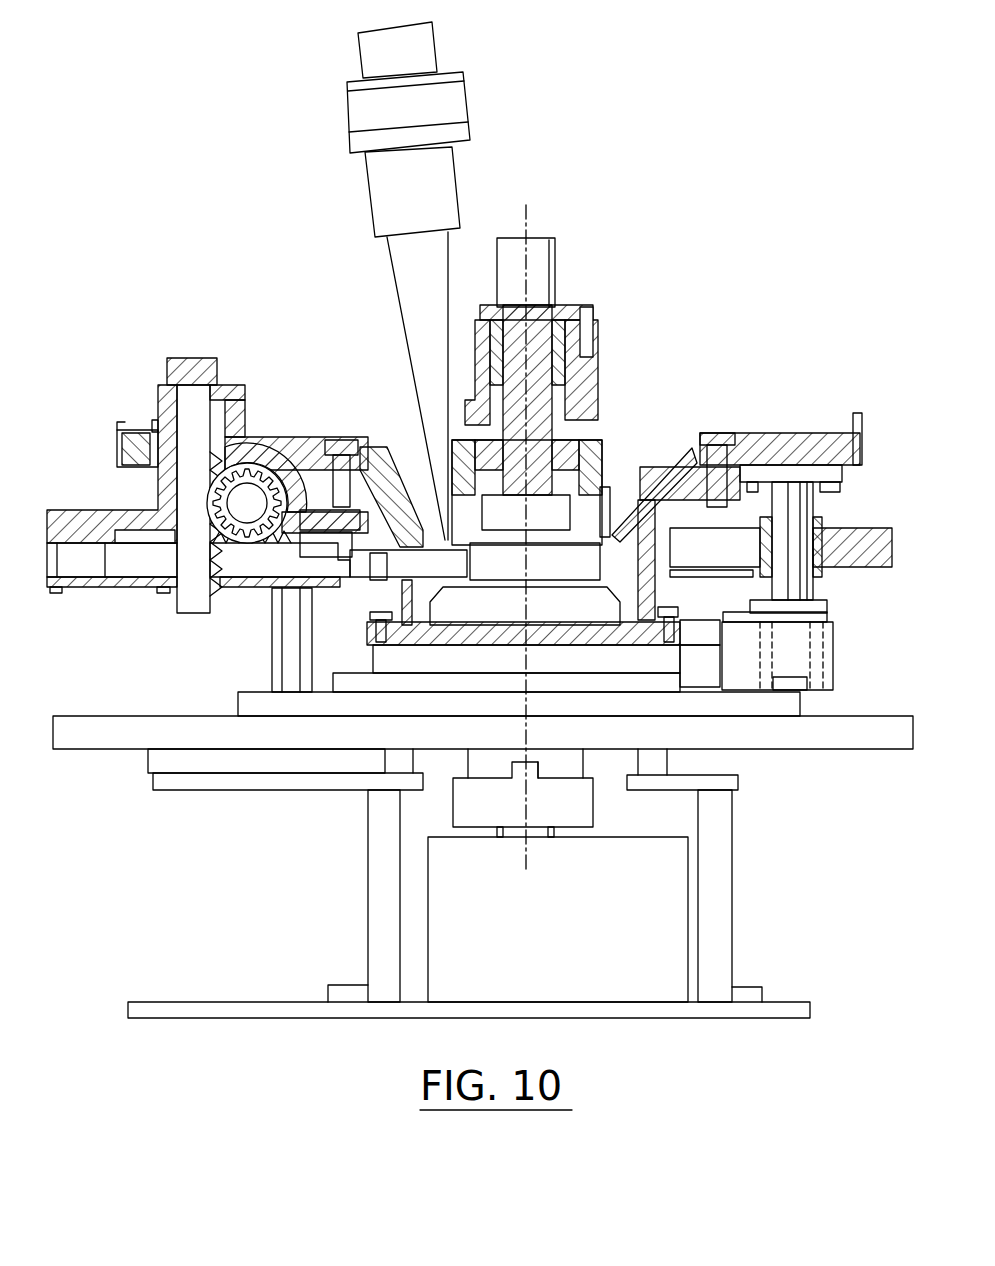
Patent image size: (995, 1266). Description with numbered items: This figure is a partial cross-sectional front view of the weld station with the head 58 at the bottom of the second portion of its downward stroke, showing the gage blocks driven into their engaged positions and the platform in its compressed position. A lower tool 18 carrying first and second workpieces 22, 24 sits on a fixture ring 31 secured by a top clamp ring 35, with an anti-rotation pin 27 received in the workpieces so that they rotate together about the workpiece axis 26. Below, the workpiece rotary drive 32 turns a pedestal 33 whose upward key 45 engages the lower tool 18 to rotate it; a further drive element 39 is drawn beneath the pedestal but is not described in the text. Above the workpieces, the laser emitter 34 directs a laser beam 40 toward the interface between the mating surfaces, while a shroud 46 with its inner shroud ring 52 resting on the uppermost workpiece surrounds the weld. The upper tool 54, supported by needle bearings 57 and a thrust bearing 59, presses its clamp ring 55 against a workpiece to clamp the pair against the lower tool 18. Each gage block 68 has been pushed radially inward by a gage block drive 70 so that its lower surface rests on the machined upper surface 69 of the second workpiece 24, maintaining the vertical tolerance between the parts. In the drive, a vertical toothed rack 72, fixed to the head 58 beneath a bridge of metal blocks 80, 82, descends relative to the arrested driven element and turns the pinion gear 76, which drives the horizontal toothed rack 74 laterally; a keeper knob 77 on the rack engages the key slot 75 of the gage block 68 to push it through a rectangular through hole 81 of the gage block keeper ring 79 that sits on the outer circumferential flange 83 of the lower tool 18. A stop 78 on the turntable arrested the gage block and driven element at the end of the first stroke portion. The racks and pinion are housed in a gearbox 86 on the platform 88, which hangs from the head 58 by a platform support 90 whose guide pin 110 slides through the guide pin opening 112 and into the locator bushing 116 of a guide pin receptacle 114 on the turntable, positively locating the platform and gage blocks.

The lower tool 18 is at (600, 625).
The first workpiece 22 is at (527, 510).
The second workpiece 24 is at (587, 573).
The workpiece axis 26 is at (527, 213).
The anti-rotation pin 27 is at (465, 590).
The fixture ring 31 is at (620, 690).
The workpiece rotary drive 32 is at (675, 910).
The pedestal 33 is at (463, 800).
The laser emitter 34 is at (353, 98).
The top clamp ring 35 is at (420, 668).
The drive 39 is at (557, 782).
The laser beam 40 is at (403, 277).
The key 45 is at (518, 773).
The shroud 46 is at (663, 453).
The inner shroud ring 52 is at (610, 527).
The upper tool 54 is at (537, 323).
The clamp ring 55 is at (613, 500).
The needle bearings 57 is at (553, 390).
The head 58 is at (130, 445).
The thrust bearing 59 is at (565, 442).
The gage block 68 is at (417, 510).
The machined upper surface 69 is at (578, 572).
The gage block drive 70 is at (267, 440).
The vertical toothed rack 72 is at (188, 577).
The horizontal toothed rack 74 is at (270, 563).
The key slot 75 is at (367, 600).
The pinion gear 76 is at (257, 497).
The keeper knob 77 is at (357, 560).
The stop 78 is at (287, 645).
The gage block keeper ring 79 is at (657, 600).
The metal block 80 is at (157, 420).
The rectangular through hole 81 is at (672, 555).
The metal block 82 is at (190, 362).
The outer circumferential flange 83 is at (368, 640).
The gearbox 86 is at (83, 517).
The platform 88 is at (98, 588).
The platform support 90 is at (808, 523).
The guide pin 110 is at (792, 580).
The guide pin opening 112 is at (813, 568).
The guide pin receptacle 114 is at (800, 657).
The locator bushing 116 is at (822, 617).